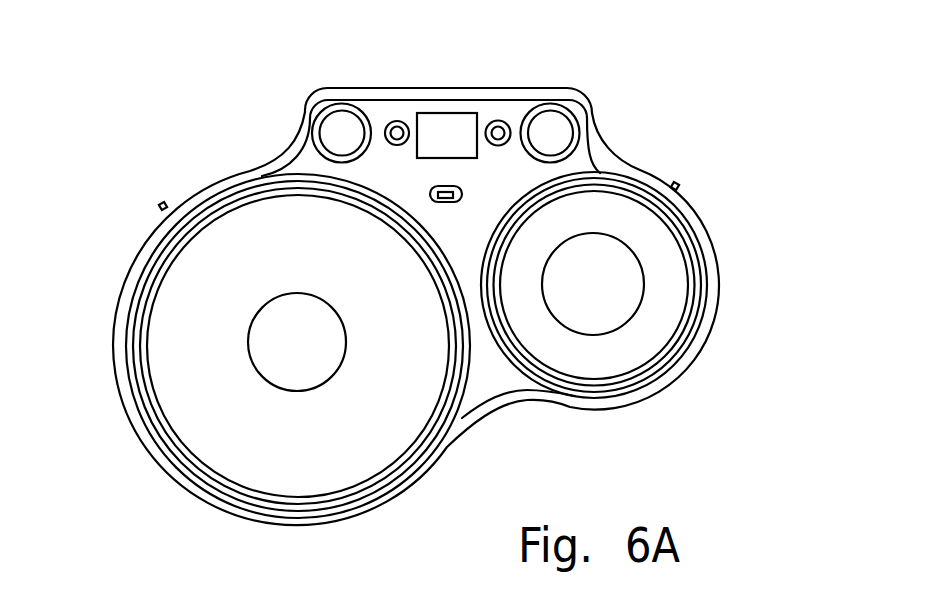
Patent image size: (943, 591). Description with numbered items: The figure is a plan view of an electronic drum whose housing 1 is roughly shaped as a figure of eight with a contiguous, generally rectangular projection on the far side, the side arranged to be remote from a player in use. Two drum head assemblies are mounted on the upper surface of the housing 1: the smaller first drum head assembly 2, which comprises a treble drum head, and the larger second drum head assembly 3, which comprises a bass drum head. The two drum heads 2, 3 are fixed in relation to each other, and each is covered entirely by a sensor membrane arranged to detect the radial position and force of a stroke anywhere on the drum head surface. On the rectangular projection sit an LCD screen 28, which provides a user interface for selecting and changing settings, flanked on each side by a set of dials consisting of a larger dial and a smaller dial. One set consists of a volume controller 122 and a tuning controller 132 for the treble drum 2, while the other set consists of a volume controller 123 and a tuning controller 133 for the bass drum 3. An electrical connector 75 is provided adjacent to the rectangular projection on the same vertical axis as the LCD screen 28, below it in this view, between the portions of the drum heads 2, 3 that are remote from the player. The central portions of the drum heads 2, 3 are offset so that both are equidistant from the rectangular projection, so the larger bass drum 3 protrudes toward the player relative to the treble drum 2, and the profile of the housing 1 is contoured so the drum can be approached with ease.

The housing 1 is at (737, 275).
The first drum head assembly 2 is at (642, 342).
The second drum head assembly 3 is at (178, 378).
The LCD screen 28 is at (447, 130).
The electrical connector 75 is at (453, 205).
The volume controller 122 is at (497, 127).
The volume controller 123 is at (397, 127).
The tuning controller 132 is at (553, 130).
The tuning controller 133 is at (342, 127).